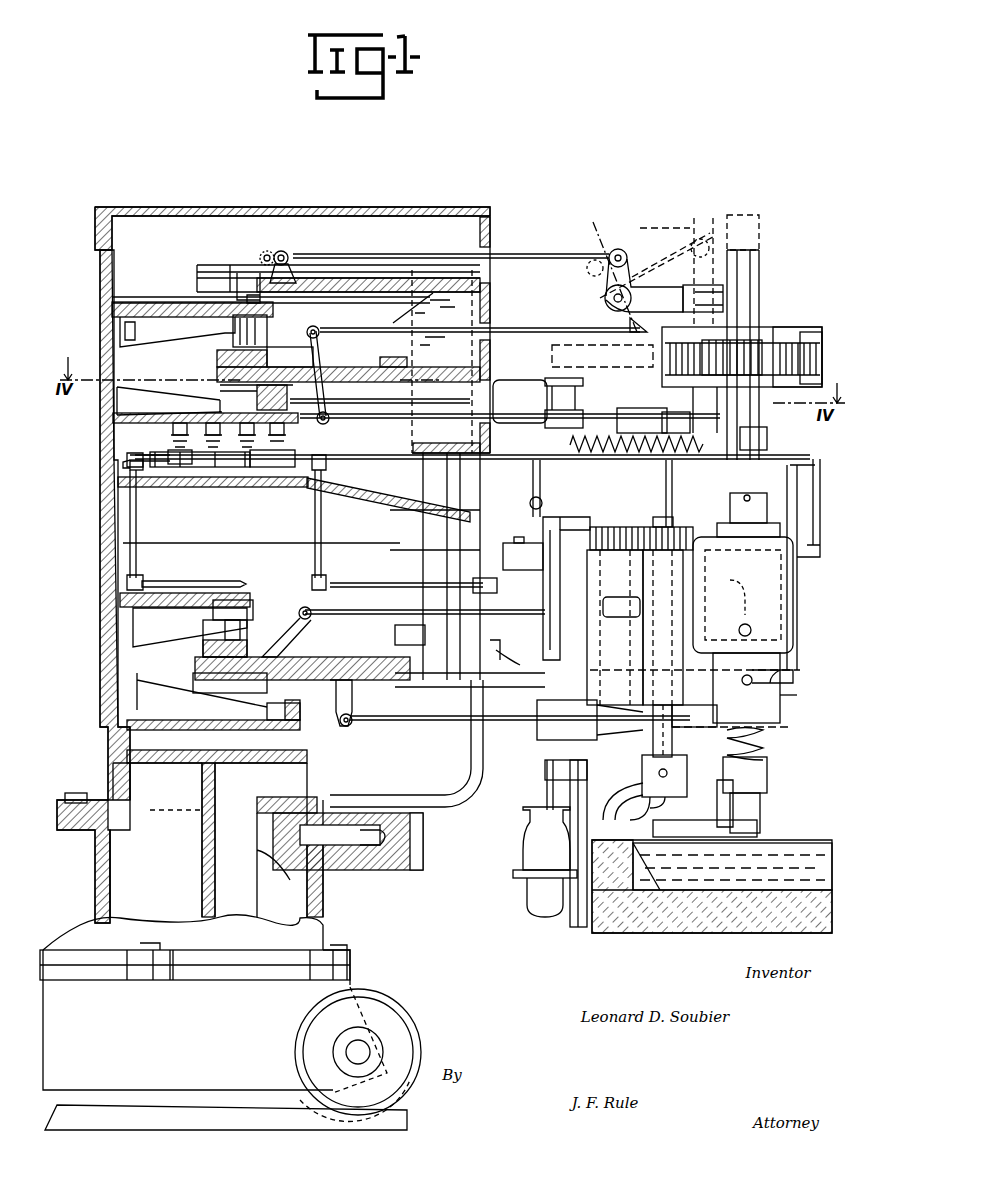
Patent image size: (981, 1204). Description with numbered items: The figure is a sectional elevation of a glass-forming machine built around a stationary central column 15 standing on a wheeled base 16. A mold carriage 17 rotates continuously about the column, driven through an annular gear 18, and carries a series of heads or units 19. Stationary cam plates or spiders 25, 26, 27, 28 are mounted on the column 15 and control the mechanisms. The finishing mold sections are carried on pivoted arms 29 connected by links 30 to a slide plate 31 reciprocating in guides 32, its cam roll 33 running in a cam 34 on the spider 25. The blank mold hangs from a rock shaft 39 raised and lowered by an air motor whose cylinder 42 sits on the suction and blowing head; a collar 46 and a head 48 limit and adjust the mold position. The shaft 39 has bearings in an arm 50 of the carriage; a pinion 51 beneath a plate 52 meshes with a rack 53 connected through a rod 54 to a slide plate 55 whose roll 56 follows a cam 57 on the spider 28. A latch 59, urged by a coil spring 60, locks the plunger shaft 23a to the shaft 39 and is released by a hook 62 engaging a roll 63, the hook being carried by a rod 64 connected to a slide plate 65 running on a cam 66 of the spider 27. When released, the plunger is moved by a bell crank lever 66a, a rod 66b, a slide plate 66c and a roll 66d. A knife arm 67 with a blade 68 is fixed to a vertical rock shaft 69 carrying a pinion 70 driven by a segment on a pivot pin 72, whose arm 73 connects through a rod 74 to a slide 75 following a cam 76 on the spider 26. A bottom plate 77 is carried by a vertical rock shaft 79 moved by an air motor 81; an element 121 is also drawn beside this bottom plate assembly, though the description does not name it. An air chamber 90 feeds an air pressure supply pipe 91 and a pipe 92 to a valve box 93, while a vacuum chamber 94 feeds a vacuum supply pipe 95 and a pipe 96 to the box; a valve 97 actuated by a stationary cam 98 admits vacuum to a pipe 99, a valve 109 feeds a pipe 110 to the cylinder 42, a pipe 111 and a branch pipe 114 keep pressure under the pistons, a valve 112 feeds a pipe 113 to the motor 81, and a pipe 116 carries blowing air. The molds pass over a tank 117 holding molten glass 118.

The central column 15 is at (108, 677).
The wheeled base 16 is at (360, 988).
The mold carriage 17 is at (445, 805).
The annular gear 18 is at (420, 860).
The head or unit 19 is at (798, 697).
The plunger shaft 23a is at (700, 487).
The stationary cam plate or spider 25 is at (202, 693).
The stationary cam plate or spider 26 is at (168, 622).
The stationary cam plate or spider 27 is at (175, 398).
The stationary cam plate or spider 28 is at (163, 304).
The pivoted arm 29 is at (706, 737).
The link 30 is at (505, 725).
The slide plate 31 is at (315, 692).
The guide 32 is at (205, 690).
The cam roll 33 is at (300, 728).
The cam 34 is at (265, 712).
The rock shaft 39 is at (760, 272).
The cylinder 42 is at (785, 580).
The collar 46 is at (760, 498).
The head 48 is at (798, 507).
The arm 50 is at (530, 378).
The pinion 51 is at (752, 345).
The plate 52 is at (795, 327).
The rack 53 is at (815, 355).
The rod 54 is at (515, 327).
The slide plate 55 is at (262, 350).
The roll 56 is at (233, 340).
The cam 57 is at (235, 328).
The arm or latch 59 is at (768, 432).
The coil spring 60 is at (614, 455).
The hook 62 is at (675, 410).
The roll 63 is at (655, 422).
The rod 64 is at (458, 416).
The slide plate 65 is at (380, 405).
The cam 66 is at (255, 400).
The bell crank lever 66a is at (640, 290).
The rod 66b is at (533, 253).
The slide plate 66c is at (298, 262).
The roll 66d is at (268, 297).
The knife arm 67 is at (637, 805).
The blade 68 is at (693, 816).
The vertical rock shaft 69 is at (653, 748).
The pinion 70 is at (655, 527).
The pivot pin 72 is at (565, 518).
The arm 73 is at (592, 570).
The rod 74 is at (378, 610).
The slide 75 is at (333, 660).
The cam 76 is at (248, 612).
The bottom plate 77 is at (515, 880).
The vertical rock shaft 79 is at (545, 790).
The air motor 81 is at (510, 556).
The air chamber 90 is at (208, 833).
The air pressure supply pipe 91 is at (430, 601).
The pipe 92 is at (314, 522).
The valve box 93 is at (230, 470).
The vacuum chamber 94 is at (269, 840).
The vacuum supply pipe 95 is at (423, 641).
The pipe 96 is at (215, 580).
The valve 97 is at (170, 440).
The stationary cam 98 is at (178, 424).
The pipe 99 is at (185, 470).
The valve 109 is at (295, 436).
The pipe 110 is at (388, 460).
The pipe 111 is at (621, 607).
The valve 112 is at (196, 423).
The pipe 113 is at (532, 490).
The branch pipe 114 is at (502, 650).
The pipe 116 is at (265, 478).
The tank 117 is at (642, 928).
The molten glass 118 is at (800, 840).
The bottle 121 is at (528, 834).